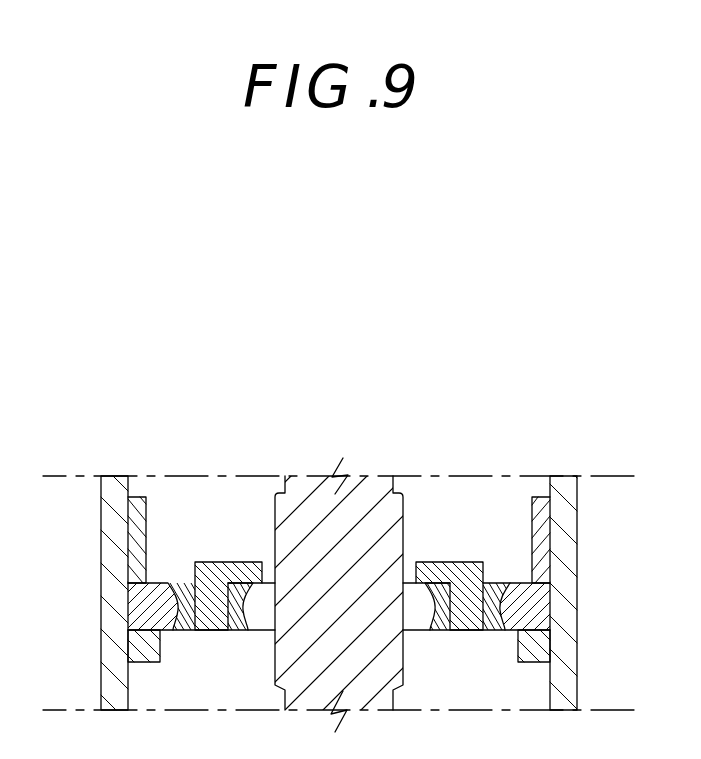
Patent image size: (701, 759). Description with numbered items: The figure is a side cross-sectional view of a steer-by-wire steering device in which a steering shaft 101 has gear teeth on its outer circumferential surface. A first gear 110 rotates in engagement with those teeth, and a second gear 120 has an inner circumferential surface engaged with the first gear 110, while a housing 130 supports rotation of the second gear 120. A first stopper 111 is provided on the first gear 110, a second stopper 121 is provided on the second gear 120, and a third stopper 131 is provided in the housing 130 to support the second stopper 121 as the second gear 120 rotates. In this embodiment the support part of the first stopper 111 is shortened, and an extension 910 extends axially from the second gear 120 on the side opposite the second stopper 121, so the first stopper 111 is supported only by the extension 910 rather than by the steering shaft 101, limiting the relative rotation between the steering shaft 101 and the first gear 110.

The steering shaft 101 is at (360, 500).
The first gear 110 is at (185, 583).
The first stopper 111 is at (233, 562).
The second gear 120 is at (137, 603).
The second stopper 121 is at (137, 643).
The housing 130 is at (563, 590).
The third stopper 131 is at (532, 660).
The extension 910 is at (137, 539).